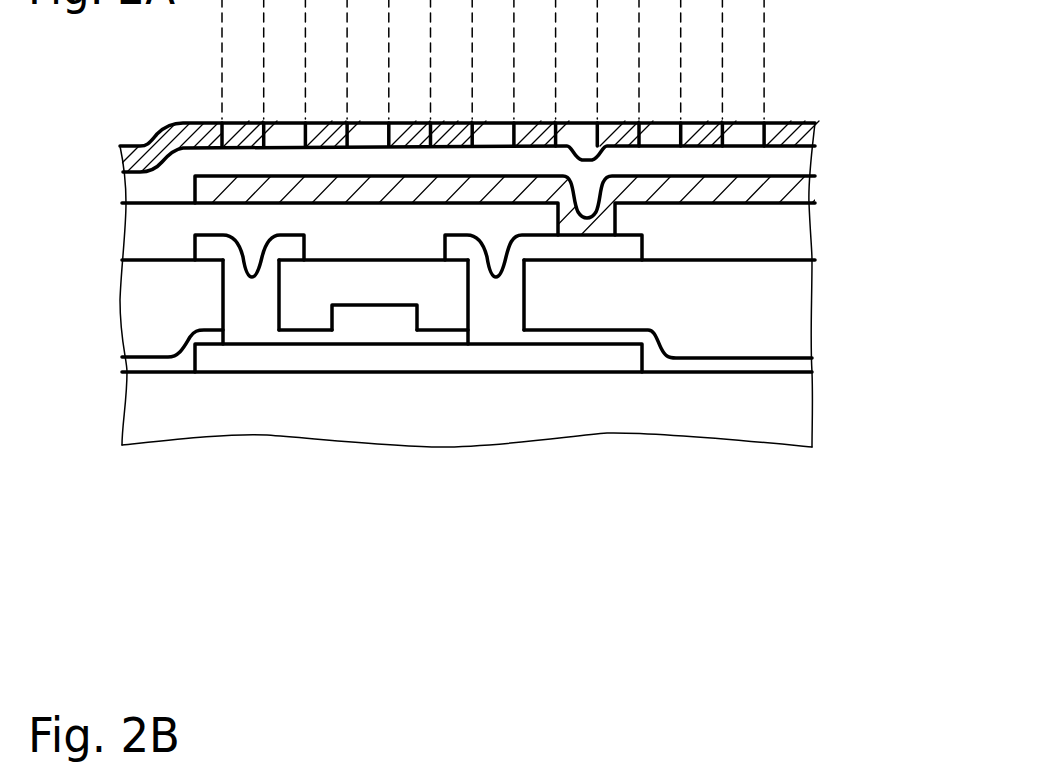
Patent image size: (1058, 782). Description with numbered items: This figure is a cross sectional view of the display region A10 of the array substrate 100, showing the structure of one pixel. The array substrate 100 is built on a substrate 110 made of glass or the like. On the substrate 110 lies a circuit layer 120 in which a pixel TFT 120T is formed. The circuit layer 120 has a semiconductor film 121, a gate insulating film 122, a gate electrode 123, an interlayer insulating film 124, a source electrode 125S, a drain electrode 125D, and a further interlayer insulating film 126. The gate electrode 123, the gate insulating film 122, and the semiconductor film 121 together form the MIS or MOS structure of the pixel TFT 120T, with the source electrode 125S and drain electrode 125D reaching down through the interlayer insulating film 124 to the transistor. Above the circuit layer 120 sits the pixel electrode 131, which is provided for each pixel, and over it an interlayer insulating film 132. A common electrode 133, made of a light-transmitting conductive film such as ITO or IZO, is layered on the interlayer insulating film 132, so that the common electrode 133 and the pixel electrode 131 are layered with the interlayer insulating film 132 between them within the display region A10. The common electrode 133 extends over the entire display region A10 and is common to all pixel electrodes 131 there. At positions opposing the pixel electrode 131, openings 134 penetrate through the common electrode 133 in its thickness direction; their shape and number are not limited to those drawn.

The array substrate 100 is at (122, 588).
The substrate 110 is at (793, 402).
The circuit layer 120 is at (125, 372).
The pixel TFT 120T is at (592, 412).
The semiconductor film 121 is at (302, 363).
The gate insulating film 122 is at (363, 339).
The gate electrode 123 is at (393, 322).
The interlayer insulating film 124 is at (797, 318).
The source electrode 125S is at (252, 330).
The drain electrode 125D is at (498, 332).
The interlayer insulating film 126 is at (788, 233).
The pixel electrode 131 is at (798, 189).
The interlayer insulating film 132 is at (795, 163).
The common electrode 133 is at (795, 128).
The opening 134 is at (762, 138).
The display region A10 is at (815, 545).